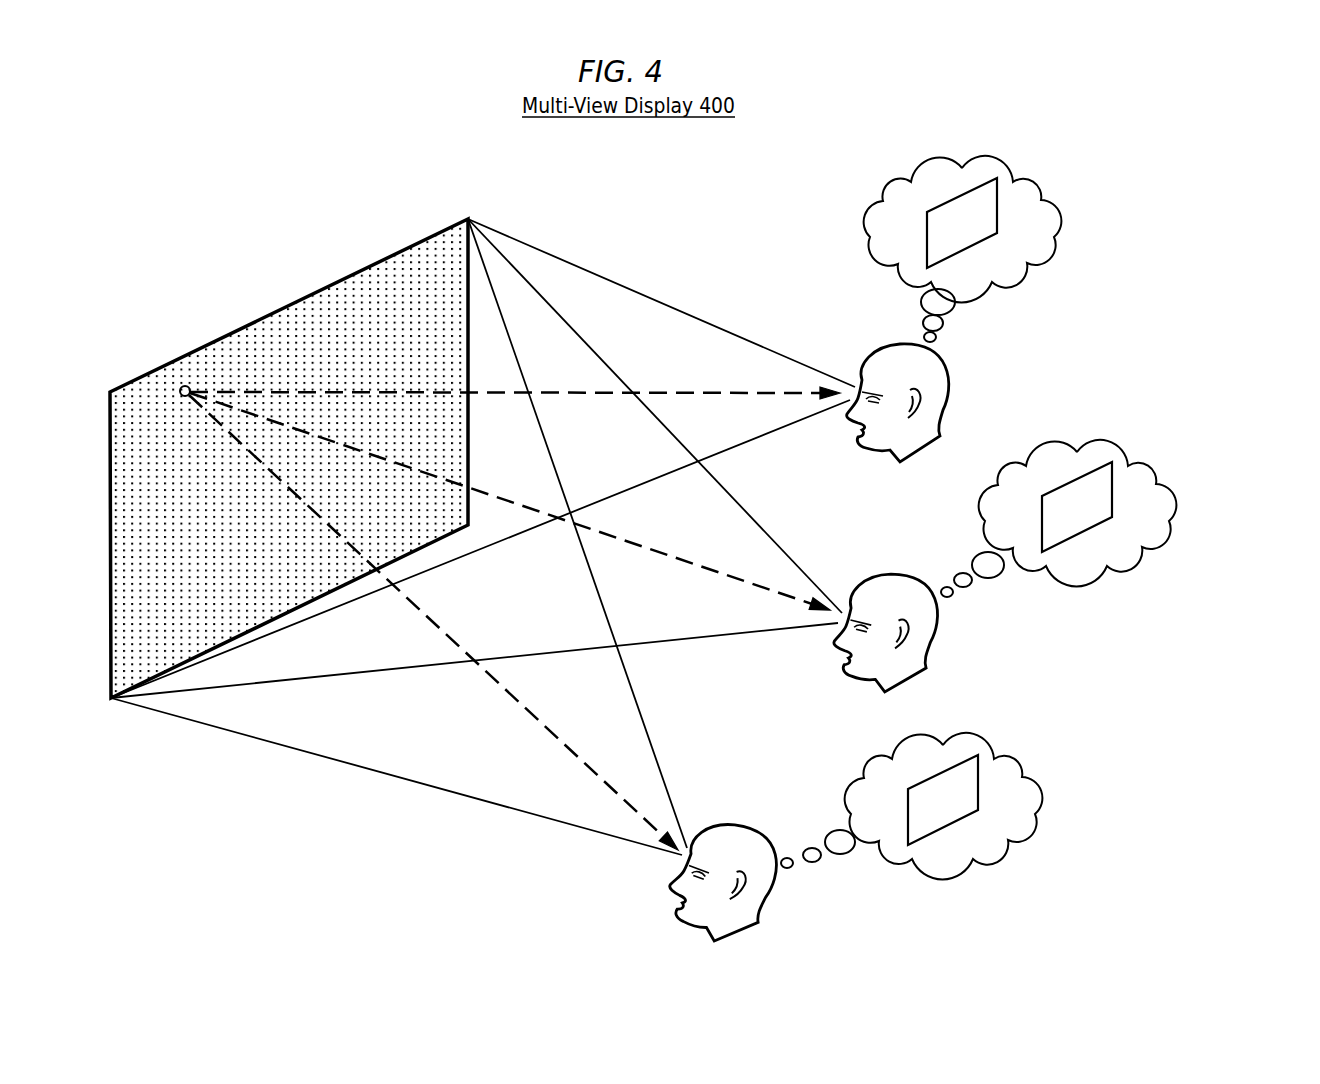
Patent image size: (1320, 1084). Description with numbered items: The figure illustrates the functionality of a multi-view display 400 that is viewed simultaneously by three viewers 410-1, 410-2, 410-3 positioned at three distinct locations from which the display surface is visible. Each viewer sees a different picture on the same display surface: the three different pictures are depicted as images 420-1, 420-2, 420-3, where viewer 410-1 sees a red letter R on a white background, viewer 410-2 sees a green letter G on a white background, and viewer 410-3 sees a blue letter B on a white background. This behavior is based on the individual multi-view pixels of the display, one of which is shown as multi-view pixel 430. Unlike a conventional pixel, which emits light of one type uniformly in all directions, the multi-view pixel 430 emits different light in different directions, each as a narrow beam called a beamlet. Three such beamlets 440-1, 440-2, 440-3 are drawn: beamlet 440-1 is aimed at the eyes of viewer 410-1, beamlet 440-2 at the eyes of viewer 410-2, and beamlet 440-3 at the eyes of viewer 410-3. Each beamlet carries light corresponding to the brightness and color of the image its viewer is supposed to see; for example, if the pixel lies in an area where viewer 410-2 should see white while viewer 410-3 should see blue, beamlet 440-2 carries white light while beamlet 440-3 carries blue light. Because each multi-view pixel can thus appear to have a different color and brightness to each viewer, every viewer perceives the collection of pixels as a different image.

The multi-view display 400 is at (436, 235).
The multi-view pixel 430 is at (183, 386).
The beamlet 440-1 is at (719, 393).
The beamlet 440-2 is at (712, 562).
The beamlet 440-3 is at (522, 694).
The viewer 410-1 is at (944, 379).
The viewer 410-2 is at (924, 645).
The viewer 410-3 is at (768, 883).
The image 420-1 is at (1046, 246).
The image 420-2 is at (1067, 572).
The image 420-3 is at (966, 863).